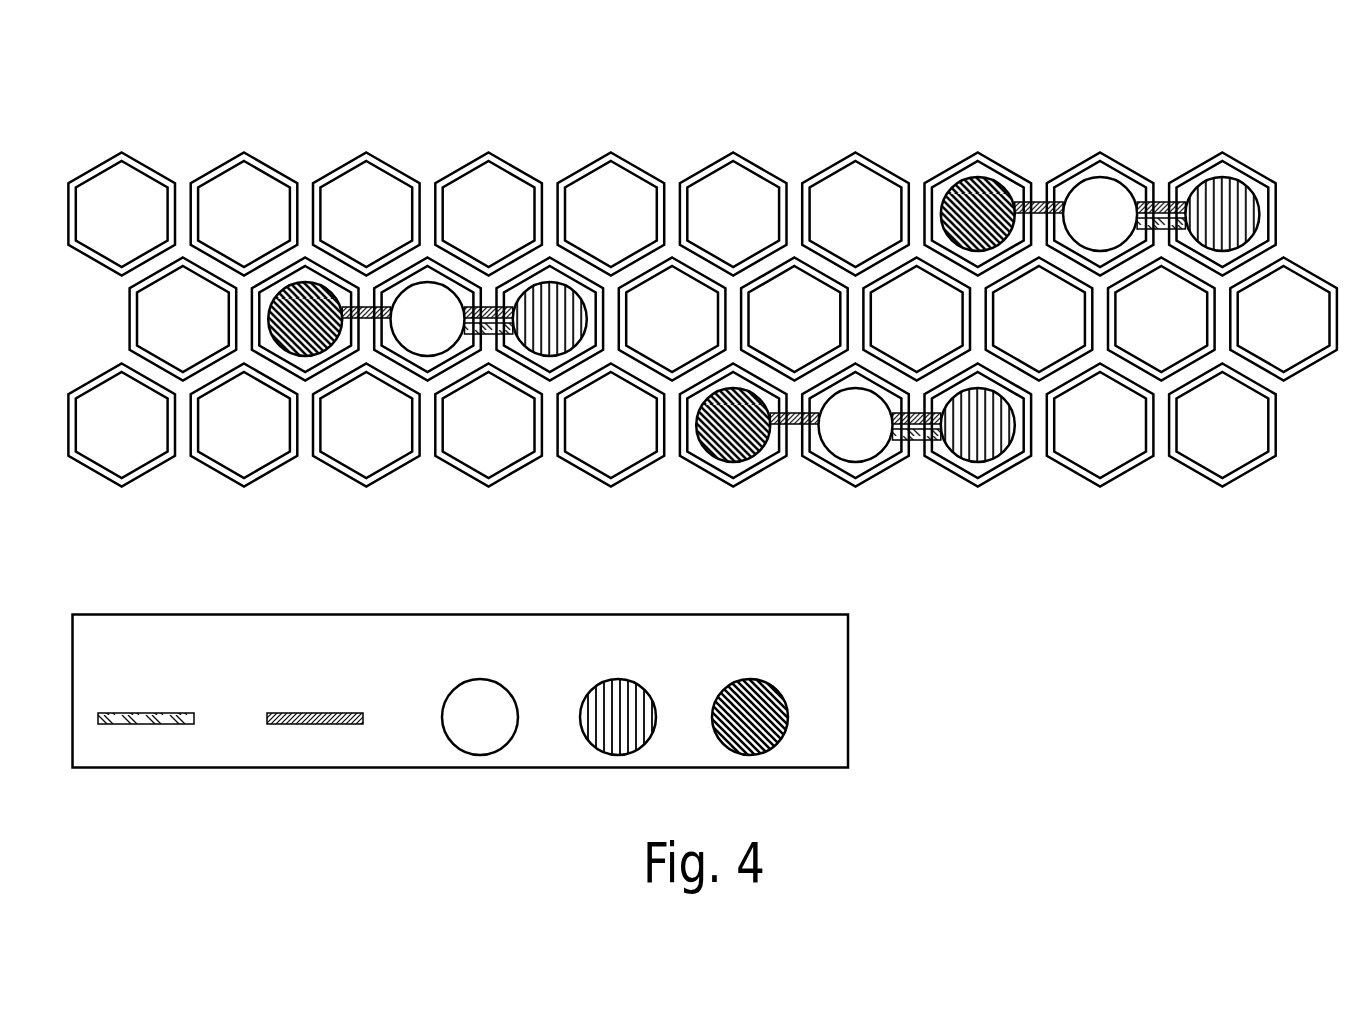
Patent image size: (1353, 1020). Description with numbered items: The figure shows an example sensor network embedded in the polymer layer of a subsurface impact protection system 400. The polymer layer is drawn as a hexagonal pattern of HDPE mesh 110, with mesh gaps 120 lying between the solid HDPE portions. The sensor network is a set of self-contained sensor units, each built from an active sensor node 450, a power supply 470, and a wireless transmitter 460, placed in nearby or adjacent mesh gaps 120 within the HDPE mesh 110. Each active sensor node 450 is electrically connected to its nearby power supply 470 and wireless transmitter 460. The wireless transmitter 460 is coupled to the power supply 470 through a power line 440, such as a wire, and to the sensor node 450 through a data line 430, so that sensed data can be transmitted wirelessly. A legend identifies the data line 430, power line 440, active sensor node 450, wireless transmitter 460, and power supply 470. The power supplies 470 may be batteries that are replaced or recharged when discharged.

The subsurface impact protection system 400 is at (186, 92).
The HDPE mesh 110 is at (632, 477).
The mesh gap 120 is at (1117, 448).
The data line 430 is at (138, 713).
The power line 440 is at (322, 713).
The active sensor node 450 is at (462, 683).
The wireless transmitter 460 is at (637, 683).
The power supply 470 is at (780, 688).